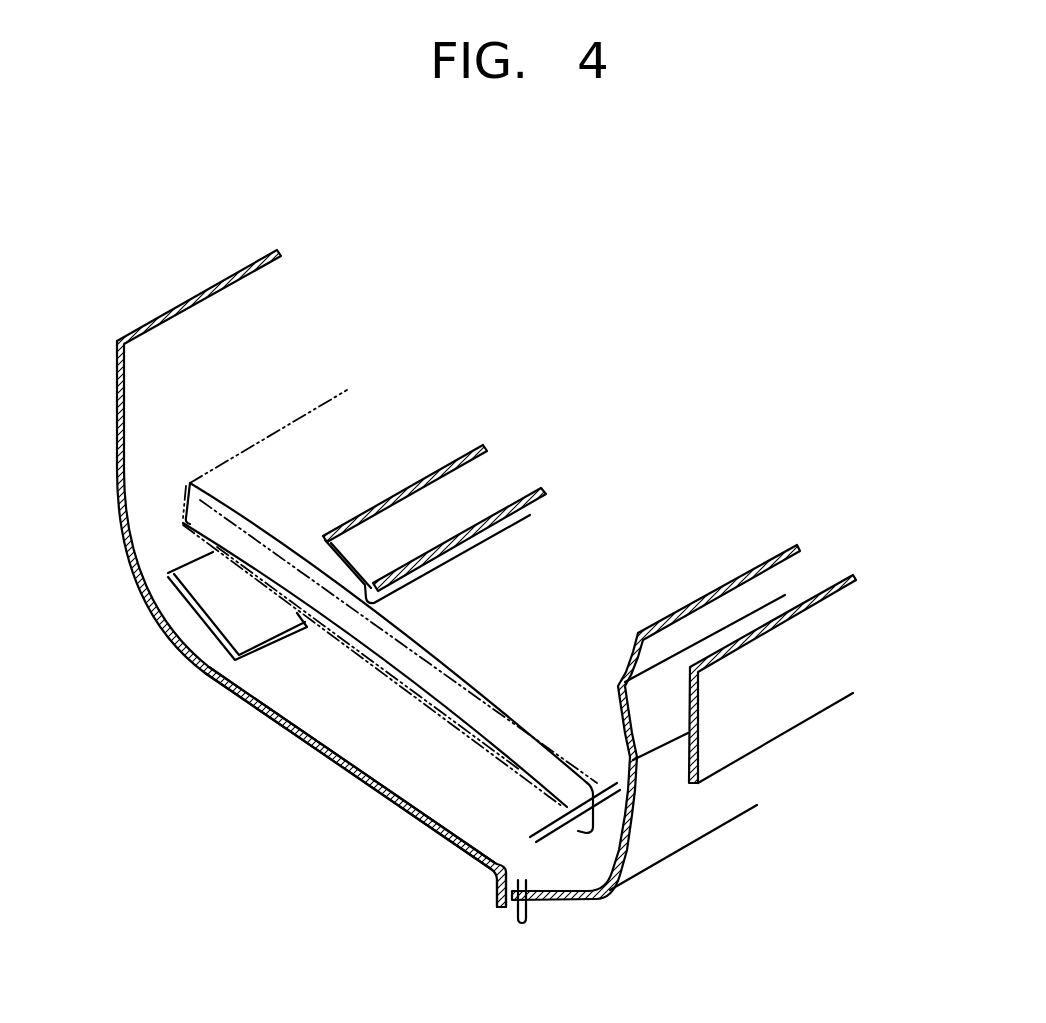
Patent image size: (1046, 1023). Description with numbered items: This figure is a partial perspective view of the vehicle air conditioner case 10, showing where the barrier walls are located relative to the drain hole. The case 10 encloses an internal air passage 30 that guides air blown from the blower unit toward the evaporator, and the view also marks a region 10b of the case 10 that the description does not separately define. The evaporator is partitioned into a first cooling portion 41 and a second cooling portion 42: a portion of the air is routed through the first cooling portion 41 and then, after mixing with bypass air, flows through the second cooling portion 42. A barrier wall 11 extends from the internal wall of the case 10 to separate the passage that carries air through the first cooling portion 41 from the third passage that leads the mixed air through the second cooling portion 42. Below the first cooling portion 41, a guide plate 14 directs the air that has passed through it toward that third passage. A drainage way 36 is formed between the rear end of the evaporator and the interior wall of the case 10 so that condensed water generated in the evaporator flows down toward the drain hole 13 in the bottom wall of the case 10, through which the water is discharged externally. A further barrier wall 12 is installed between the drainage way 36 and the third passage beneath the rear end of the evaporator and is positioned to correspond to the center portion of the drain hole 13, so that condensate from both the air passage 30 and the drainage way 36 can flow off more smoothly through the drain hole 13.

The case 10 is at (162, 668).
The bottom plate of case 10b is at (438, 798).
The barrier wall 11 is at (373, 583).
The barrier wall 12 is at (536, 847).
The drain hole 13 is at (508, 907).
The guide plate 14 is at (223, 647).
The air passage 30 is at (382, 728).
The drainage way 36 is at (606, 837).
The first cooling portion 41 is at (348, 487).
The second cooling portion 42 is at (552, 665).